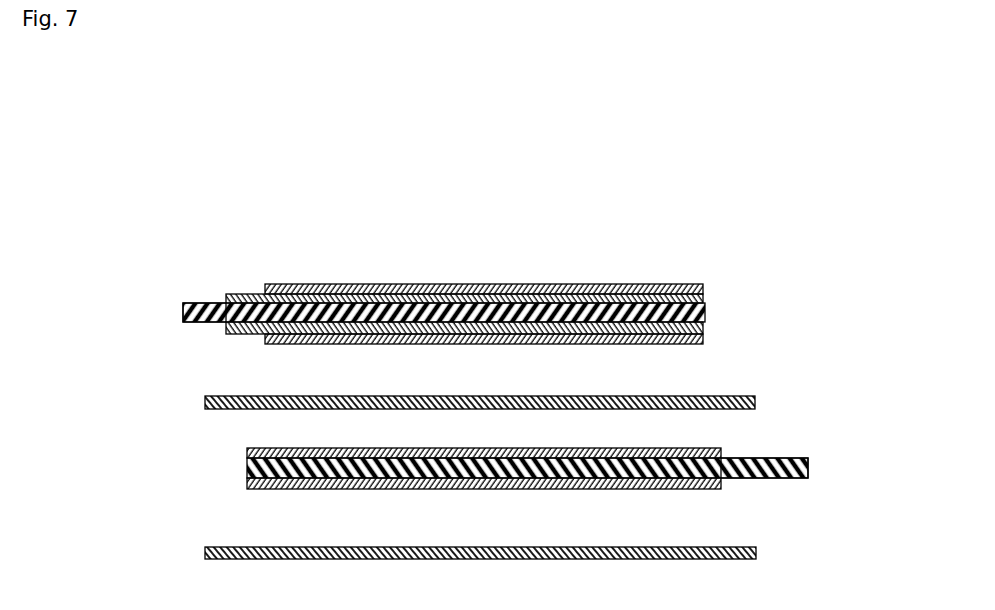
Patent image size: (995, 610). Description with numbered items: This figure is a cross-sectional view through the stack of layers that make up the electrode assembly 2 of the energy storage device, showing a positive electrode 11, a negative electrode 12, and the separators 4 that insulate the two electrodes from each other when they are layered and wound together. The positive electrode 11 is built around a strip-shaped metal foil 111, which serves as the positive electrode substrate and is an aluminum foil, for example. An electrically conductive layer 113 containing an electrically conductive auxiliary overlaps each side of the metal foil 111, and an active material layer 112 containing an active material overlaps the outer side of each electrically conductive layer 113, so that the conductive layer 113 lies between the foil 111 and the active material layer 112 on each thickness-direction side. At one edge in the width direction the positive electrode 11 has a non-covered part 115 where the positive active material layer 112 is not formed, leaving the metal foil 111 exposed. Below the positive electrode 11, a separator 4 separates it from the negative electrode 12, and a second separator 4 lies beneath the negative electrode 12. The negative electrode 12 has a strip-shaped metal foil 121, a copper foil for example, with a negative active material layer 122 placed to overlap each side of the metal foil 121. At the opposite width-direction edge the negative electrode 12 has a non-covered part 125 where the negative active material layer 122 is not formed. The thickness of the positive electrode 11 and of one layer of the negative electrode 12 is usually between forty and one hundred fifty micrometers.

The electrode assembly 2 is at (112, 156).
The positive electrode 11 is at (837, 263).
The metal foil 111 is at (706, 314).
The active material layer 112 is at (704, 287).
The electrically conductive layer 113 is at (704, 297).
The non-covered part 115 is at (200, 296).
The separator 4 is at (205, 401).
The negative electrode 12 is at (120, 438).
The metal foil 121 is at (247, 468).
The negative active material layer 122 is at (247, 450).
The non-covered part 125 is at (766, 482).